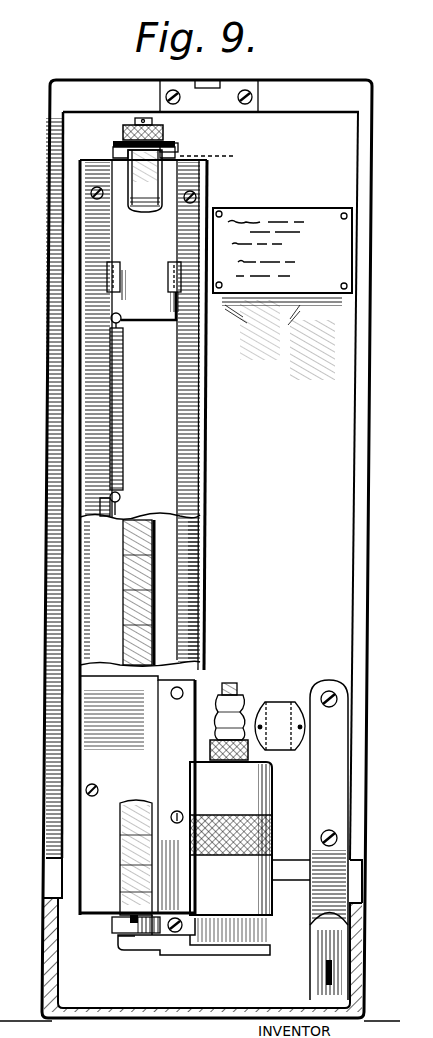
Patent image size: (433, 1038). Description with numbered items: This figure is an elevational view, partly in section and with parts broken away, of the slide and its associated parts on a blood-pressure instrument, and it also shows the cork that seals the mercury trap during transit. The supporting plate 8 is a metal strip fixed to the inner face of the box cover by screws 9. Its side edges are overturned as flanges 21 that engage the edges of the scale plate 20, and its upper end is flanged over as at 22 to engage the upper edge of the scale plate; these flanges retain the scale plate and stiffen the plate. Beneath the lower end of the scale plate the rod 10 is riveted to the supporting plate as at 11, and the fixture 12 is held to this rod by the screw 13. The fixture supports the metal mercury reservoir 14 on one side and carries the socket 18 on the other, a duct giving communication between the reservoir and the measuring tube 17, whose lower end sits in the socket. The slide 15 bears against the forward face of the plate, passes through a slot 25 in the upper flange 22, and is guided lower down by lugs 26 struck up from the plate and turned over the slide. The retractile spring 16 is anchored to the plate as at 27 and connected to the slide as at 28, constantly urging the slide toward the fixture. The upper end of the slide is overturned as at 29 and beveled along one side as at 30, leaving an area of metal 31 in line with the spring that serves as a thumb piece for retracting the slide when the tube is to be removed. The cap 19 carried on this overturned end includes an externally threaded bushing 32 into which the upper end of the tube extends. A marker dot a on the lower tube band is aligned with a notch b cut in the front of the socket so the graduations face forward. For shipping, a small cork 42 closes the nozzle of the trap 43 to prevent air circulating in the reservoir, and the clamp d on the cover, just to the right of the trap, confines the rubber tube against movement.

The supporting plate 8 is at (186, 446).
The screws 9 is at (93, 195).
The rod 10 is at (182, 713).
The rivets 11 is at (203, 682).
The fixture 12 is at (167, 945).
The screw 13 is at (178, 940).
The mercury reservoir 14 is at (240, 803).
The slide 15 is at (165, 312).
The spring 16 is at (121, 417).
The measuring tube 17 is at (155, 617).
The socket 18 is at (112, 926).
The cap 19 is at (165, 135).
The scale plate 20 is at (185, 560).
The overturned edge flanges 21 is at (78, 433).
The upper overturned flange 22 is at (97, 160).
The slot 25 is at (218, 159).
The lugs 26 is at (170, 281).
The spring anchorage 27 is at (121, 502).
The spring connection 28 is at (112, 319).
The overturned upper end of slide 29 is at (115, 143).
The beveled side 30 is at (185, 152).
The thumb piece 31 is at (118, 142).
The bushing 32 is at (175, 146).
The cork 42 is at (238, 690).
The trap 43 is at (280, 713).
The dot a is at (135, 917).
The notch b is at (130, 938).
The clamp d is at (293, 695).